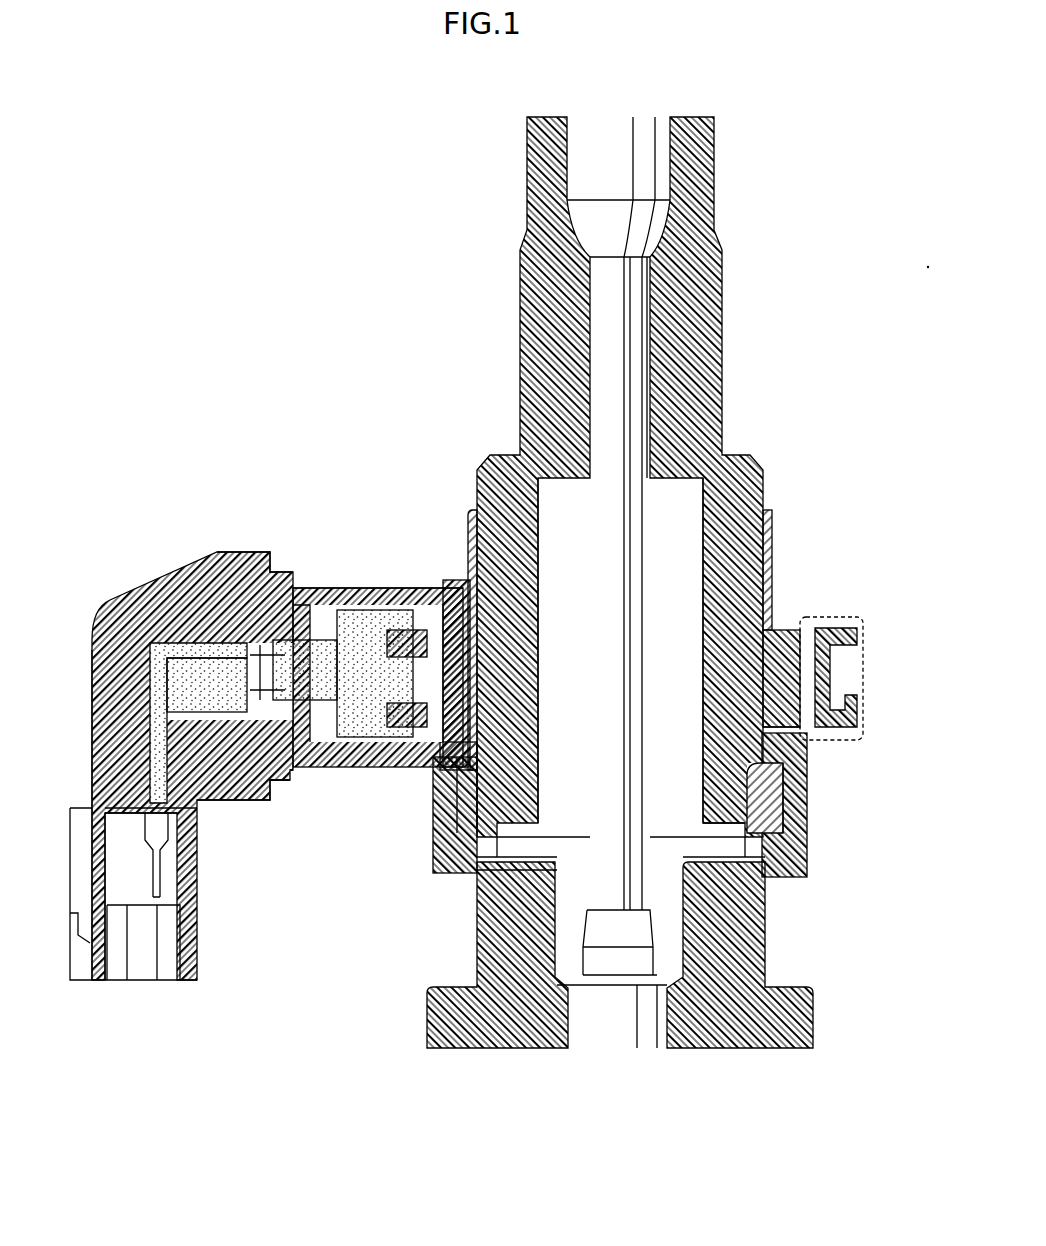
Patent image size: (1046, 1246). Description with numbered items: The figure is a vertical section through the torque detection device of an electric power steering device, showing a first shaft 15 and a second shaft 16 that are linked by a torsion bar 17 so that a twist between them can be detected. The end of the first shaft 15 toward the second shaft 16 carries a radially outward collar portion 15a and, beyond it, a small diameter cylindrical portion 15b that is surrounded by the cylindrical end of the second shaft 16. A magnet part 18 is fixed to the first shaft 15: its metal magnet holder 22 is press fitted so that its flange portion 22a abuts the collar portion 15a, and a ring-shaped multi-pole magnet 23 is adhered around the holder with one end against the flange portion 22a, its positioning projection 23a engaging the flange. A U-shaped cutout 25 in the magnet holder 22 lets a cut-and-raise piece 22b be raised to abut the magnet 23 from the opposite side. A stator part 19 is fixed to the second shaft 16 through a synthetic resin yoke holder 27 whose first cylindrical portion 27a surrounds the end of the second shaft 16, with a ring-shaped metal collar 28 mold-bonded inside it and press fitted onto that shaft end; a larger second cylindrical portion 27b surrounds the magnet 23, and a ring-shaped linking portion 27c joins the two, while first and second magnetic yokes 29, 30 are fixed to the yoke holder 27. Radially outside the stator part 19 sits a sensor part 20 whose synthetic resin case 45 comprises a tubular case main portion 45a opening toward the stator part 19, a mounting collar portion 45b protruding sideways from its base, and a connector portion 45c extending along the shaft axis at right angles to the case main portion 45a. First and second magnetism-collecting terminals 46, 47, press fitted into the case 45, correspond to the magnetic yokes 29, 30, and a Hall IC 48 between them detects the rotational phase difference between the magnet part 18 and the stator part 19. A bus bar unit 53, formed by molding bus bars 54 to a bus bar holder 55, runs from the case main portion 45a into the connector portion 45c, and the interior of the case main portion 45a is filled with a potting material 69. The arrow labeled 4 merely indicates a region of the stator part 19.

The clip 4 is at (823, 608).
The first shaft 15 is at (708, 300).
The collar portion 15a is at (438, 815).
The small diameter cylindrical portion 15b is at (490, 880).
The second shaft 16 is at (445, 1000).
The torsion bar 17 is at (640, 564).
The magnet part 18 is at (437, 600).
The stator part 19 is at (433, 843).
The sensor part 20 is at (200, 545).
The magnet holder 22 is at (468, 530).
The flange portion 22a is at (405, 770).
The cut-and-raise piece 22b is at (768, 630).
The magnet 23 is at (470, 698).
The positioning projection 23a is at (757, 743).
The cutout 25 is at (770, 632).
The yoke holder 27 is at (786, 877).
The first cylindrical portion 27a is at (793, 797).
The second cylindrical portion 27b is at (443, 660).
The linking portion 27c is at (800, 730).
The collar 28 is at (770, 800).
The first magnetic yoke 29 is at (335, 705).
The second magnetic yoke 30 is at (415, 600).
The case 45 is at (262, 812).
The case main portion 45a is at (370, 600).
The mounting collar portion 45b is at (228, 550).
The connector portion 45c is at (197, 935).
The first magnetism-collecting terminal 46 is at (330, 785).
The second magnetism-collecting terminal 47 is at (345, 600).
The Hall IC 48 is at (312, 600).
The bus bar unit 53 is at (116, 690).
The bus bar 54 is at (153, 900).
The bus bar holder 55 is at (168, 648).
The potting material 69 is at (215, 700).